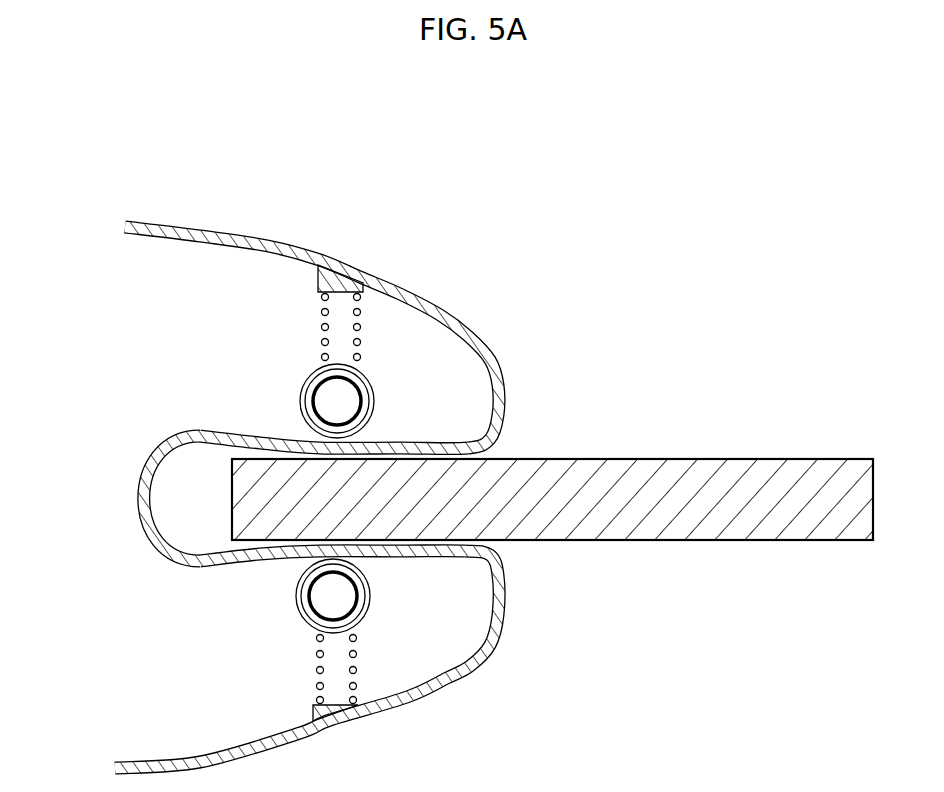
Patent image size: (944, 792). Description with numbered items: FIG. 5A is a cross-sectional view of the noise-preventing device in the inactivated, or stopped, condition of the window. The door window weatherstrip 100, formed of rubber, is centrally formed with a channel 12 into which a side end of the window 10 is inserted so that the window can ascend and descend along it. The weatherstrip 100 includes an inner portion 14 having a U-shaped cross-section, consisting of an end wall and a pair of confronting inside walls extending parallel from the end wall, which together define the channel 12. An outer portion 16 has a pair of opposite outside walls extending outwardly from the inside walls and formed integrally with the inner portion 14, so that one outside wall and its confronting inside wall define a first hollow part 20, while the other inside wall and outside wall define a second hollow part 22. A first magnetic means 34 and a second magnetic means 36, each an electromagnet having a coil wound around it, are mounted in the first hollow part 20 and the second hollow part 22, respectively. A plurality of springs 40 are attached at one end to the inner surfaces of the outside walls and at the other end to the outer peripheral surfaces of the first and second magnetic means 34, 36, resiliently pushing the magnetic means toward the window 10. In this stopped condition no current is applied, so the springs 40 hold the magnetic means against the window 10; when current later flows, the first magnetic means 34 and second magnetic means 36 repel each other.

The window 10 is at (740, 458).
The channel 12 is at (188, 517).
The inner portion 14 is at (410, 440).
The outer portion 16 is at (268, 233).
The first hollow part 20 is at (432, 628).
The second hollow part 22 is at (467, 410).
The first magnetic means 34 is at (296, 595).
The second magnetic means 36 is at (298, 389).
The springs 40 is at (320, 323).
The door window weatherstrip 100 is at (380, 279).